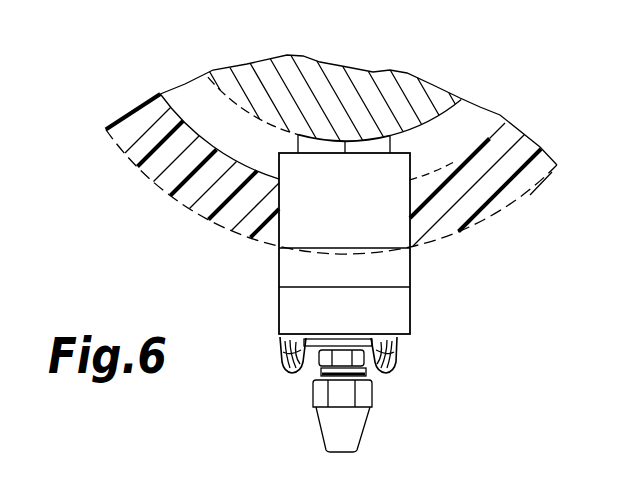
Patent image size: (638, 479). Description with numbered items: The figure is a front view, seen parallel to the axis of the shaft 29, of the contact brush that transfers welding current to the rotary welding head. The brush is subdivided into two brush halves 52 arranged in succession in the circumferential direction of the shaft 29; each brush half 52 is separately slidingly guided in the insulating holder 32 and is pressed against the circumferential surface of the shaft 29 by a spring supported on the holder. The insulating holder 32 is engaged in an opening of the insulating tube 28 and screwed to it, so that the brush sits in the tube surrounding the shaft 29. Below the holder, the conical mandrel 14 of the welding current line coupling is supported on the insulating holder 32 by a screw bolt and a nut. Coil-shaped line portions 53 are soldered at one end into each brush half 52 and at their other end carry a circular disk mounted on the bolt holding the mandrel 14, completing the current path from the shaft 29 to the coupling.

The conical mandrel 14 is at (328, 423).
The insulating tube 28 is at (223, 223).
The shaft 29 is at (247, 77).
The insulating holder 32 is at (288, 310).
The brush halves 52 is at (300, 143).
The line portions 53 is at (287, 371).